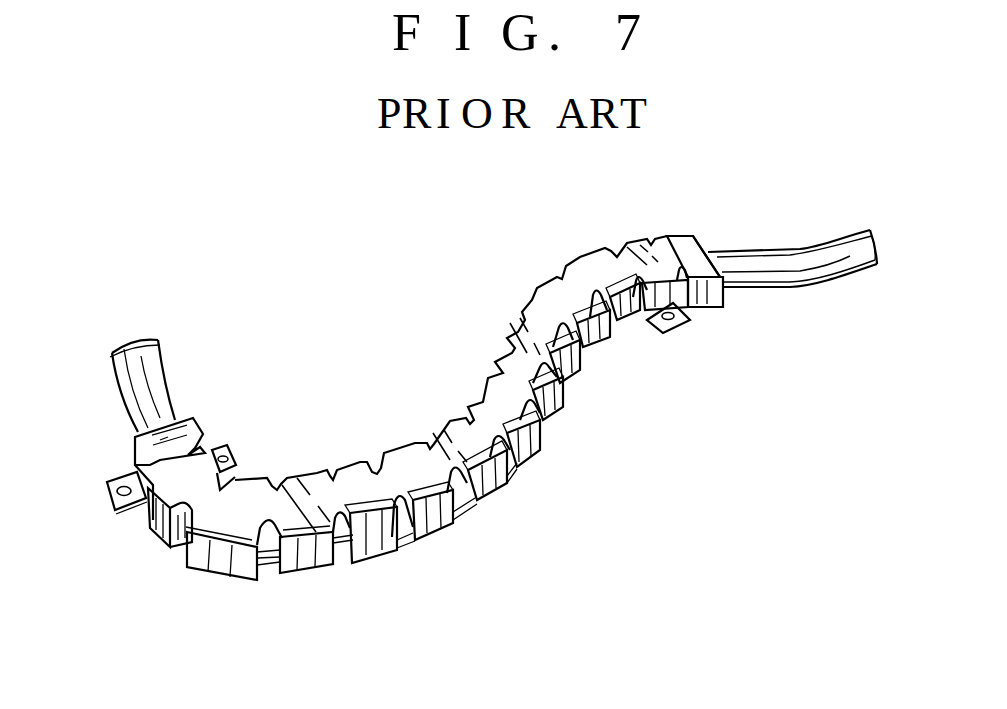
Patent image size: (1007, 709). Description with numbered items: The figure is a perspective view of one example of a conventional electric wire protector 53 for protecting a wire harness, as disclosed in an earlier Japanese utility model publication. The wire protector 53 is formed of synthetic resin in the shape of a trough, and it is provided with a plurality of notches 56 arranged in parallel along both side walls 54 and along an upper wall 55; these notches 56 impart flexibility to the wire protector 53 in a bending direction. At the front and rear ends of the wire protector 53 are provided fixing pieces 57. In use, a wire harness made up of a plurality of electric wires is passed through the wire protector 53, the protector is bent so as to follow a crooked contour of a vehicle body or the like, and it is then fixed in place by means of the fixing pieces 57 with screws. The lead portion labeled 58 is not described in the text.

The wire protector 53 is at (561, 468).
The side walls 54 is at (430, 520).
The upper wall 55 is at (347, 484).
The notches 56 is at (463, 505).
The fixing pieces 57 is at (122, 505).
The right lead wire 58 is at (773, 288).